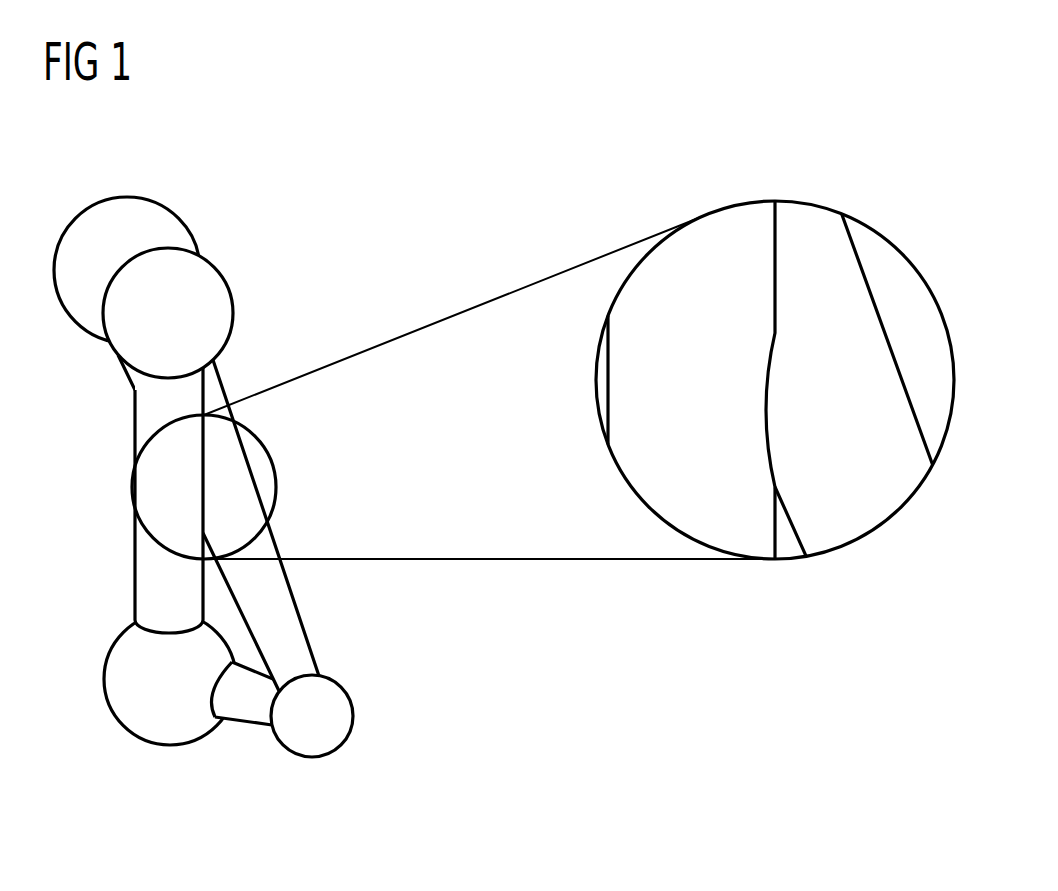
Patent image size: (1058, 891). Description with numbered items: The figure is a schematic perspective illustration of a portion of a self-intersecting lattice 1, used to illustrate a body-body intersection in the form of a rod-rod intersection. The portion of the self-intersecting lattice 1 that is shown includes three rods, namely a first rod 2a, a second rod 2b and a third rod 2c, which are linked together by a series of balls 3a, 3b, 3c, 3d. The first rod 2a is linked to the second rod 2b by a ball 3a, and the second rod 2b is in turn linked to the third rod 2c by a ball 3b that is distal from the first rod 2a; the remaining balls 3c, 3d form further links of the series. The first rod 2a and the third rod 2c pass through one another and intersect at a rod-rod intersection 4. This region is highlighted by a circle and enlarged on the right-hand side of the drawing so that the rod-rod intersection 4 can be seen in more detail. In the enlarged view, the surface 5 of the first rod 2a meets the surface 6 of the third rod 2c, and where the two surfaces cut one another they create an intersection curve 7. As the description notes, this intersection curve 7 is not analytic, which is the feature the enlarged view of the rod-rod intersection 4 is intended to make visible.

The self-intersecting lattice 1 is at (229, 455).
The first rod 2a is at (142, 585).
The second rod 2b is at (250, 715).
The third rod 2c is at (297, 637).
The ball 3a is at (106, 676).
The ball 3b is at (343, 715).
The ball 3c is at (128, 205).
The ball 3d is at (225, 315).
The rod-rod intersection 4 is at (190, 463).
The surface of the first rod 5 is at (648, 485).
The surface of the third rod 6 is at (867, 522).
The intersection curve 7 is at (780, 408).